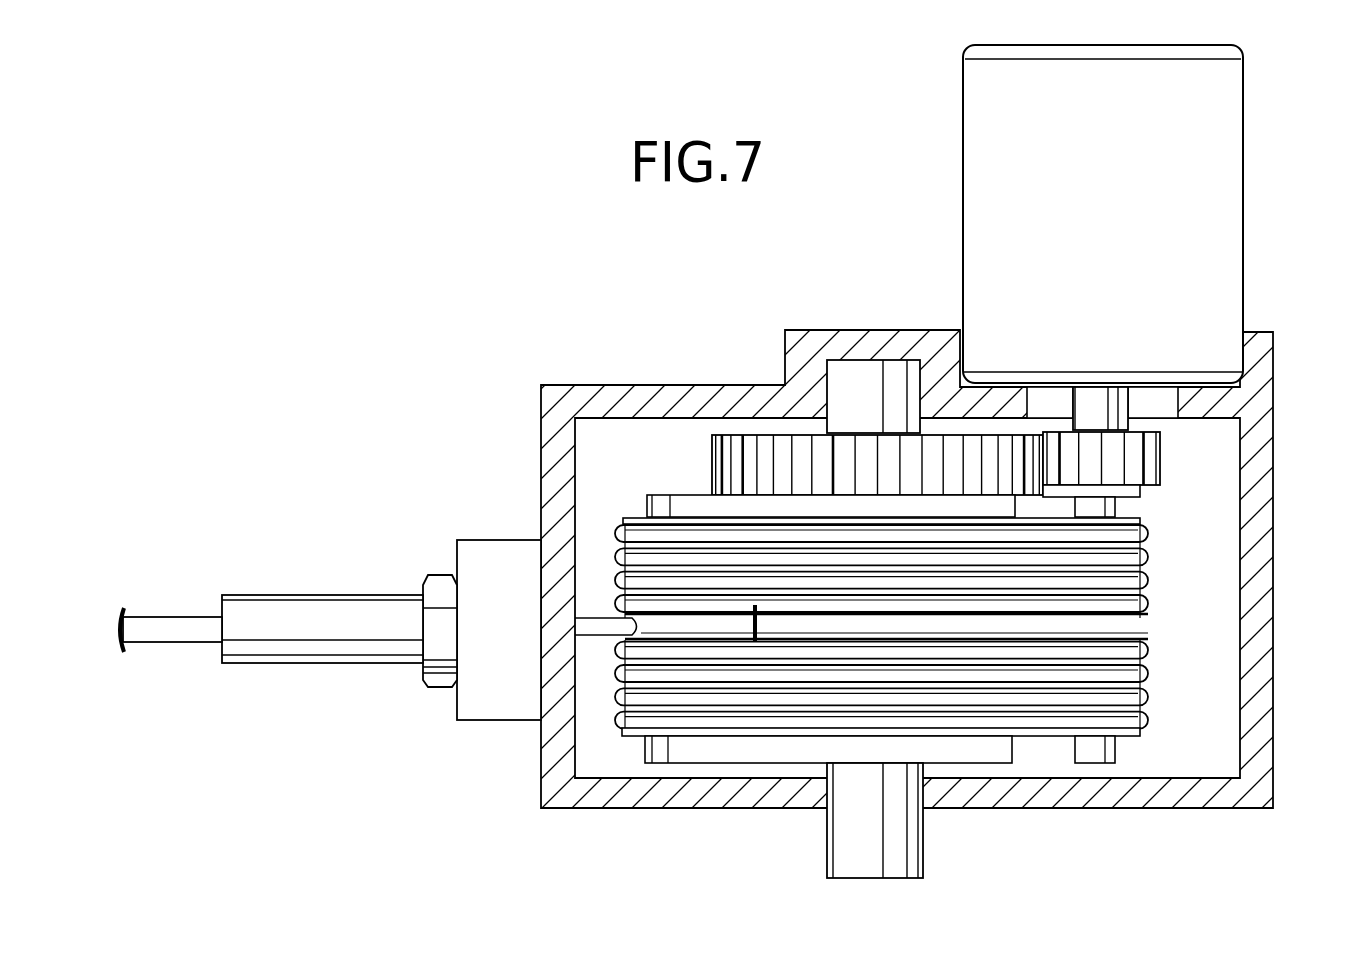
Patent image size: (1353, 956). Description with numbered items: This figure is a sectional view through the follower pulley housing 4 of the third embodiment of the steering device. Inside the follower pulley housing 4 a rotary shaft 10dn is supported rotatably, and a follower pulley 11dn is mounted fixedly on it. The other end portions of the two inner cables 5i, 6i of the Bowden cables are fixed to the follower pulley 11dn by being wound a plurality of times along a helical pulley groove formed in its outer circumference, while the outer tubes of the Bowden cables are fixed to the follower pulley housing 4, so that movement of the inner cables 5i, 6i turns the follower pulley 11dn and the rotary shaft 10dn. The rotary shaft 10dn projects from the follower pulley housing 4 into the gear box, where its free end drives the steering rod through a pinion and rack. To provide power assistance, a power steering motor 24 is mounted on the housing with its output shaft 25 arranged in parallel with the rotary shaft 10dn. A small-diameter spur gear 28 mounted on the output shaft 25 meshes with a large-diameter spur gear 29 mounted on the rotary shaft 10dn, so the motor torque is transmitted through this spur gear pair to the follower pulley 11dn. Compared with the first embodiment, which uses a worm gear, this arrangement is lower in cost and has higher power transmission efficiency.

The follower pulley housing 4 is at (1245, 405).
The power steering motor 24 is at (1133, 187).
The output shaft 25 is at (1100, 400).
The small-diameter spur gear 28 is at (1140, 457).
The large-diameter spur gear 29 is at (712, 460).
The inner cable 5i is at (1125, 555).
The inner cable 6i is at (1128, 695).
The follower pulley 11dn is at (1118, 752).
The rotary shaft 10dn is at (893, 824).